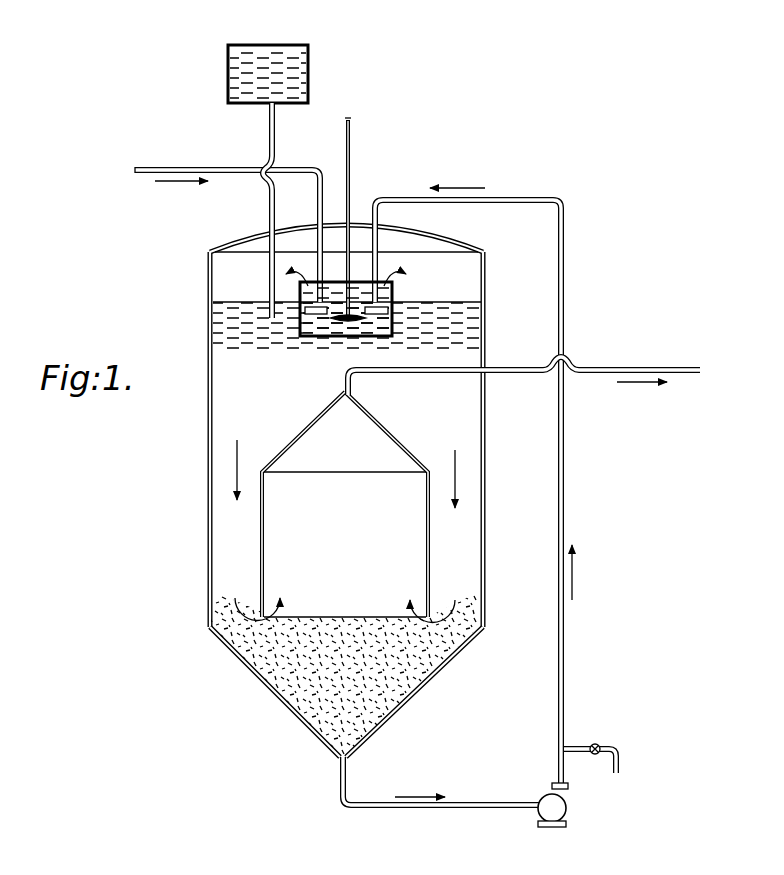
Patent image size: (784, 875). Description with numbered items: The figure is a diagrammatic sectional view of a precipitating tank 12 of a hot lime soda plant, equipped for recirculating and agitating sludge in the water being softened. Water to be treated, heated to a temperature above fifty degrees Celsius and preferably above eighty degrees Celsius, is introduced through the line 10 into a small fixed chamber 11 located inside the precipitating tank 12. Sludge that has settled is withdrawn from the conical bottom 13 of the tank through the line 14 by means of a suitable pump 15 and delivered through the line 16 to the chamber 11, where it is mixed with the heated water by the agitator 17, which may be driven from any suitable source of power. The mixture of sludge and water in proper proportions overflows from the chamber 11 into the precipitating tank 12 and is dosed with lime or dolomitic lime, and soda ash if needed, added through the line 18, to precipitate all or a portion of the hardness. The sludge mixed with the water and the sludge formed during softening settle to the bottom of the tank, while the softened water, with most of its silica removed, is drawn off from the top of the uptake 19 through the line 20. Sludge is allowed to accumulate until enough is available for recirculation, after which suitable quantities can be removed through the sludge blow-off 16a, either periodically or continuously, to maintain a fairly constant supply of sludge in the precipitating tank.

The line 10 is at (300, 167).
The small fixed chamber 11 is at (316, 338).
The precipitating tank 12 is at (208, 514).
The conical bottom 13 is at (415, 695).
The line 14 is at (441, 808).
The pump 15 is at (566, 808).
The line 16 is at (566, 478).
The sludge blow-off 16a is at (612, 750).
The agitator 17 is at (352, 168).
The line 18 is at (270, 208).
The uptake 19 is at (393, 433).
The line 20 is at (524, 374).